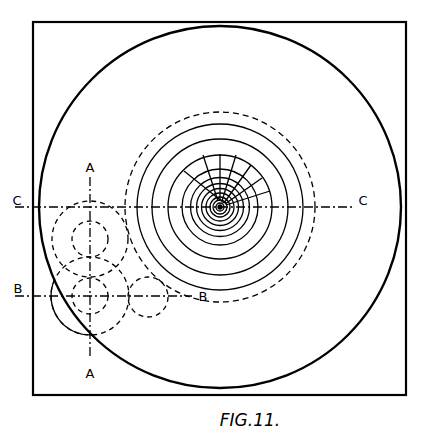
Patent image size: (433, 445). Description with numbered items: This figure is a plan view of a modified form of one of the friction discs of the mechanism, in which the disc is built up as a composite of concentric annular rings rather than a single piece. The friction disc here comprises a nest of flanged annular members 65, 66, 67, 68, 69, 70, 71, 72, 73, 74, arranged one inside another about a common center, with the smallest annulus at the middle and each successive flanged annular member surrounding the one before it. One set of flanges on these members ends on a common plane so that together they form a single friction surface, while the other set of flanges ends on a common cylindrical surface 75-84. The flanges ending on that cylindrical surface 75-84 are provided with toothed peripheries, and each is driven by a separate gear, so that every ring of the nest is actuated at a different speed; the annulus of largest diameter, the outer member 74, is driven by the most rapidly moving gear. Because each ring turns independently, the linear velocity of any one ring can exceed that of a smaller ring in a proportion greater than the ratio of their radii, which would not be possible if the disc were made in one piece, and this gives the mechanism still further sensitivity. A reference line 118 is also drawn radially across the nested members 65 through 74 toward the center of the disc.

The reference line 118 is at (196, 181).
The flanged annular member 65 is at (205, 171).
The flanged annular member 66 is at (220, 171).
The flanged annular member 67 is at (233, 171).
The flanged annular member 68 is at (243, 177).
The flanged annular member 69 is at (251, 185).
The flanged annular member 70 is at (256, 195).
The flanged annular member 71 is at (258, 212).
The flanged annular member 72 is at (271, 226).
The flanged annular member 73 is at (281, 244).
The flanged annular member 74 is at (279, 266).
The common cylindrical surface 75-84 is at (273, 287).